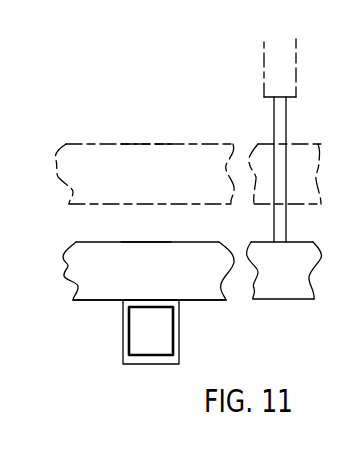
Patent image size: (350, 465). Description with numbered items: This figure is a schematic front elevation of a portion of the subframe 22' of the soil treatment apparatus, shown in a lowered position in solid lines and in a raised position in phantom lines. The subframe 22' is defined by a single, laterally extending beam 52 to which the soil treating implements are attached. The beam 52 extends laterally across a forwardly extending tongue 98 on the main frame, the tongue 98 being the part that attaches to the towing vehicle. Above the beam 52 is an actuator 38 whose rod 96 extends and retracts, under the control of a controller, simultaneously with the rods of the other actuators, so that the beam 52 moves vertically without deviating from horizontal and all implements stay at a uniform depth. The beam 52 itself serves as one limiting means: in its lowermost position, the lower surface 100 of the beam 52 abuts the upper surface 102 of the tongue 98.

The subframe 22' is at (167, 192).
The beam 52 is at (138, 149).
The actuator 38 is at (290, 80).
The rod 96 is at (273, 113).
The tongue 98 is at (178, 336).
The lower surface 100 is at (97, 298).
The upper surface 102 is at (145, 298).